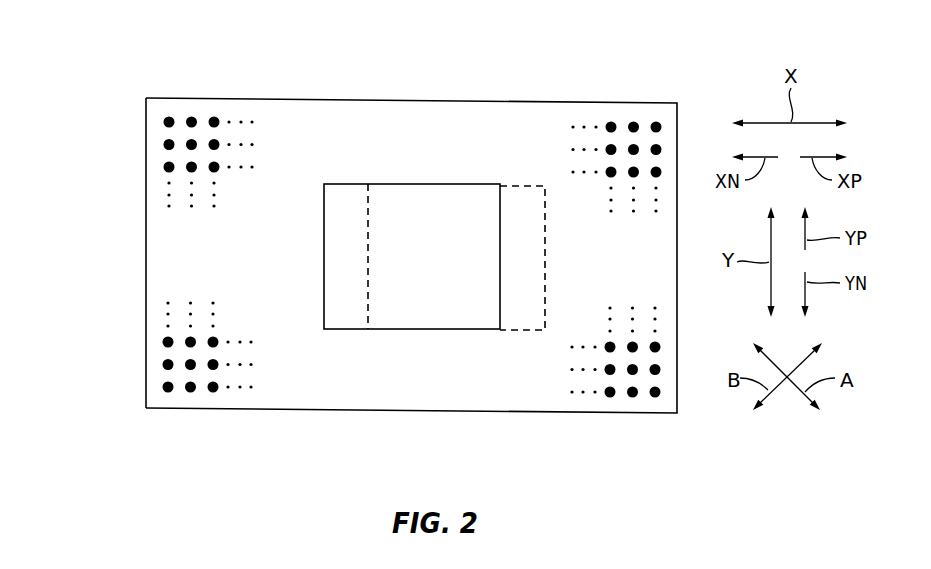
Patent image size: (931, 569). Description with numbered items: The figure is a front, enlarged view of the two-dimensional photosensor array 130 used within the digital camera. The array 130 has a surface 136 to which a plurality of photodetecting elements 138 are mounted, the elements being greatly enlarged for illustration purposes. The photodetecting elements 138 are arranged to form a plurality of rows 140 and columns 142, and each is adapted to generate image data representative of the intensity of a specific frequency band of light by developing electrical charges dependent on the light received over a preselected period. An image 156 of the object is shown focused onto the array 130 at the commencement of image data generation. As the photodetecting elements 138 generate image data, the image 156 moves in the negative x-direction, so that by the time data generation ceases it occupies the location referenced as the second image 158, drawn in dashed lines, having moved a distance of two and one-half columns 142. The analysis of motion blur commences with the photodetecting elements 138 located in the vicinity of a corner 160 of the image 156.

The two-dimensional photosensor array 130 is at (584, 59).
The surface 136 is at (407, 146).
The photodetecting elements 138 is at (165, 387).
The rows 140 is at (135, 143).
The columns 142 is at (193, 85).
The image 156 is at (347, 184).
The second image 158 is at (522, 186).
The corner 160 is at (324, 184).